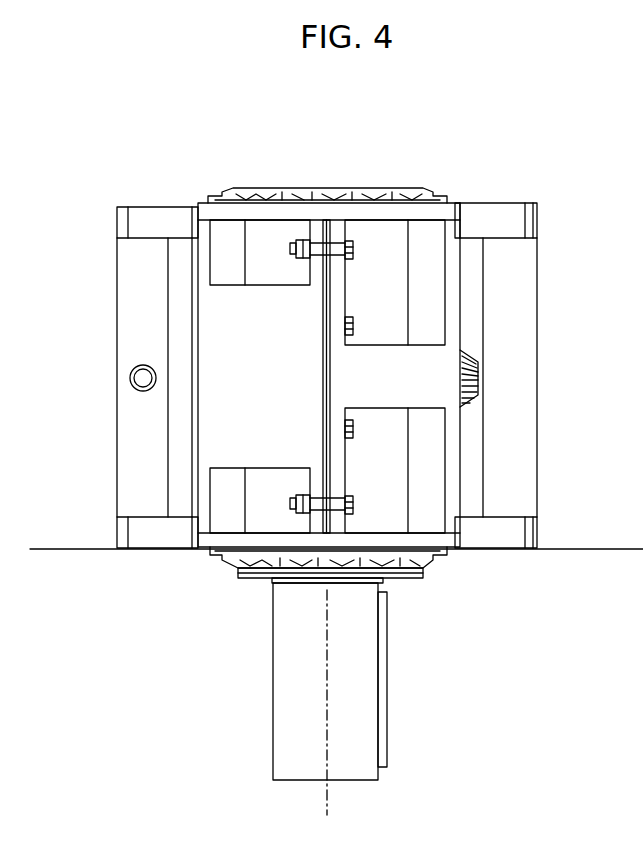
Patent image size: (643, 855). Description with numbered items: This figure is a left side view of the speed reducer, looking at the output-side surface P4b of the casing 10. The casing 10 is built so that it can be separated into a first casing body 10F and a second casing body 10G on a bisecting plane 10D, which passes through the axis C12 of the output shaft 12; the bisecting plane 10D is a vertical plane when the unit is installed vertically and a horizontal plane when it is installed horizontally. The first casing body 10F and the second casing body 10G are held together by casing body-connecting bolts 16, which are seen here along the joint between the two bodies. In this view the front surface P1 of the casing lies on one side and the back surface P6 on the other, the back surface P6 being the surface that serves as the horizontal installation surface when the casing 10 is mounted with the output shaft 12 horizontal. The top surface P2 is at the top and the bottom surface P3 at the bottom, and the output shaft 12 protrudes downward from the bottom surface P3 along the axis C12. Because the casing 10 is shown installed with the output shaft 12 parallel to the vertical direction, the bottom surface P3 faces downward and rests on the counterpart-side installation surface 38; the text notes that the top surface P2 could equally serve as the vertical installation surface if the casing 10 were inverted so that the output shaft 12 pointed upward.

The casing 10 is at (345, 448).
The second casing body 10G is at (162, 203).
The first casing body 10F is at (497, 203).
The bisecting plane 10D is at (332, 297).
The top surface P2 is at (325, 187).
The back surface P6 is at (113, 320).
The front surface P1 is at (542, 318).
The bottom surface P3 is at (510, 552).
The output-side surface P4b is at (293, 378).
The casing body-connecting bolts 16 is at (353, 247).
The counterpart-side installation surface 38 is at (602, 547).
The output shaft 12 is at (362, 688).
The axis of the output shaft C12 is at (330, 800).